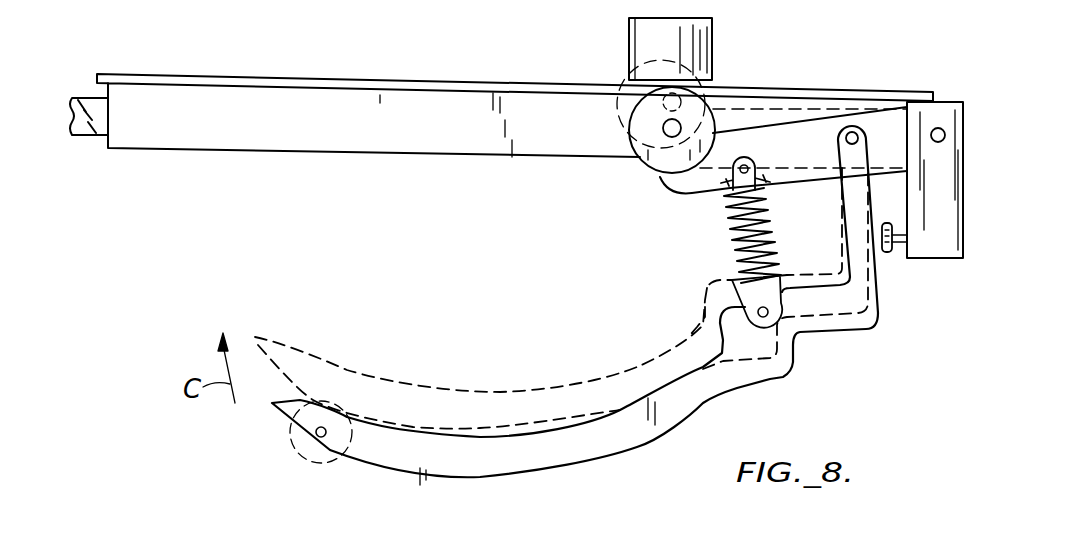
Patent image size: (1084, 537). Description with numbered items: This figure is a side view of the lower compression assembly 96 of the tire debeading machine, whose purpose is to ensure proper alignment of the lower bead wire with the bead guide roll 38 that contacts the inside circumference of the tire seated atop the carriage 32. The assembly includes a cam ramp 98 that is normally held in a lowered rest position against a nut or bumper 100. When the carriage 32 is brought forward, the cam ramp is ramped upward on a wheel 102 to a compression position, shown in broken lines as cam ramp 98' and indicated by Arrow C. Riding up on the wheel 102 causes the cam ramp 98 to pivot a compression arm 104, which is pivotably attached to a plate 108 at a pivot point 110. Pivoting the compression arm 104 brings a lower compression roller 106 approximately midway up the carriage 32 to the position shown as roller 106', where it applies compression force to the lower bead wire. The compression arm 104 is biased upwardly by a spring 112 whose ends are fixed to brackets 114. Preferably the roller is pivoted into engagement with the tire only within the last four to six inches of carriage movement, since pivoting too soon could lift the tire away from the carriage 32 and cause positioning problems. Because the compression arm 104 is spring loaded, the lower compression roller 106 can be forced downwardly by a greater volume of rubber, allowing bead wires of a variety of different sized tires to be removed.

The carriage 32 is at (208, 140).
The bead guide roll 38 is at (640, 40).
The lower compression assembly 96 is at (835, 366).
The cam ramp 98 is at (575, 316).
The cam ramp in compression position 98' is at (561, 298).
The nut or bumper 100 is at (888, 252).
The wheel 102 is at (306, 455).
The compression arm 104 is at (697, 188).
The lower compression roller 106 is at (641, 148).
The lower compression roller in raised position 106' is at (627, 104).
The plate 108 is at (943, 243).
The pivot point 110 is at (939, 127).
The spring 112 is at (730, 235).
The brackets 114 is at (762, 180).